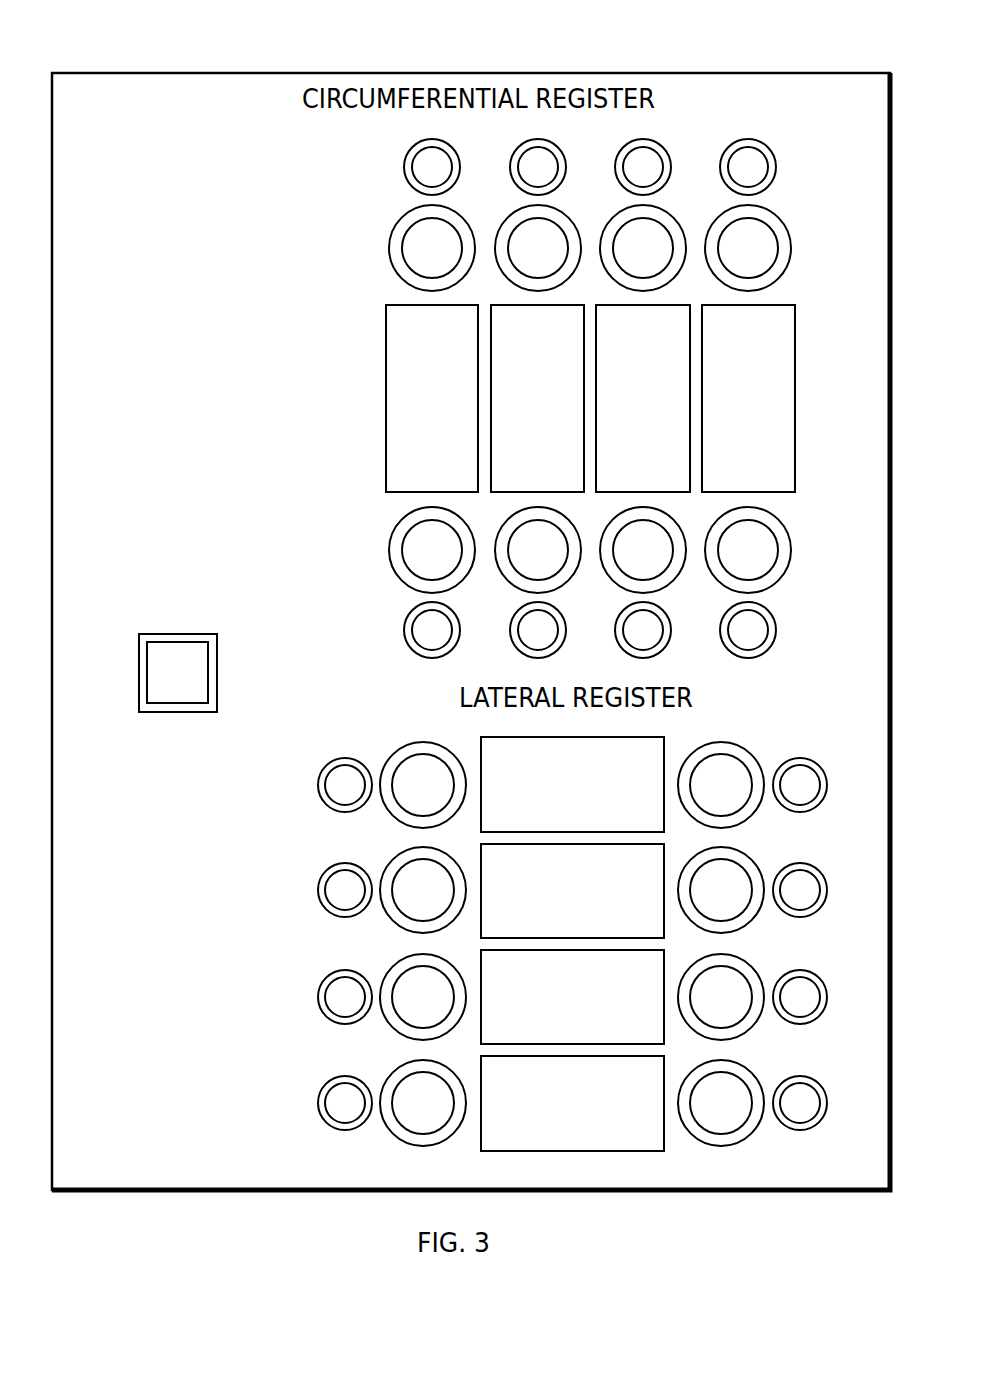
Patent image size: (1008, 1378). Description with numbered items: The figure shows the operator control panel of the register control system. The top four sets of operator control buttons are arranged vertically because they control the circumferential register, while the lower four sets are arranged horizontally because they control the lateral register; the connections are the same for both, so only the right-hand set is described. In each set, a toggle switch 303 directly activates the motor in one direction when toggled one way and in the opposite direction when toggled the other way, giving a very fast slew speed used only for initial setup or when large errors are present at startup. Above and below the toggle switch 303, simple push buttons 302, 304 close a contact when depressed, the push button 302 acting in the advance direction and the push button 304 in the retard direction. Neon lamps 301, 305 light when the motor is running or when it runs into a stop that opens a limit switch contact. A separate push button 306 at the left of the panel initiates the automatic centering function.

The neon lamp 301 is at (747, 140).
The push button 302 is at (782, 218).
The toggle switch 303 is at (773, 305).
The push button 304 is at (778, 580).
The neon lamp 305 is at (753, 655).
The push button 306 is at (180, 634).